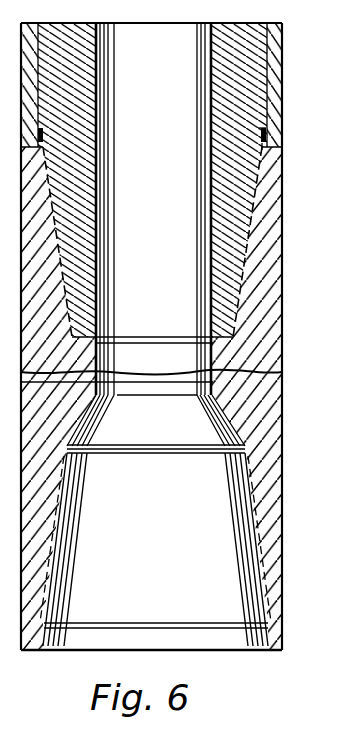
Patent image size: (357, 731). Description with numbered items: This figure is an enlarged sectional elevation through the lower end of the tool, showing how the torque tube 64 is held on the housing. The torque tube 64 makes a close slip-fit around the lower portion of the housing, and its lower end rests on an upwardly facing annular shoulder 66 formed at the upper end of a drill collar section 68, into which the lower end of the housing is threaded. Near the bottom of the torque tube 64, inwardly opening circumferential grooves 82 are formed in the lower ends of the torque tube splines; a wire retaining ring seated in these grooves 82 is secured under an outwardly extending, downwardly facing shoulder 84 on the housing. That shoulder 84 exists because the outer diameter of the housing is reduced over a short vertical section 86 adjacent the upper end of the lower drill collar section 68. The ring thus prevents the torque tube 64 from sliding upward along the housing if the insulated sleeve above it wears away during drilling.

The torque tube 64 is at (284, 92).
The annular shoulder 66 is at (281, 148).
The drill collar section 68 is at (284, 173).
The circumferential grooves 82 is at (266, 136).
The downwardly facing shoulder 84 is at (263, 130).
The vertical section 86 is at (262, 147).